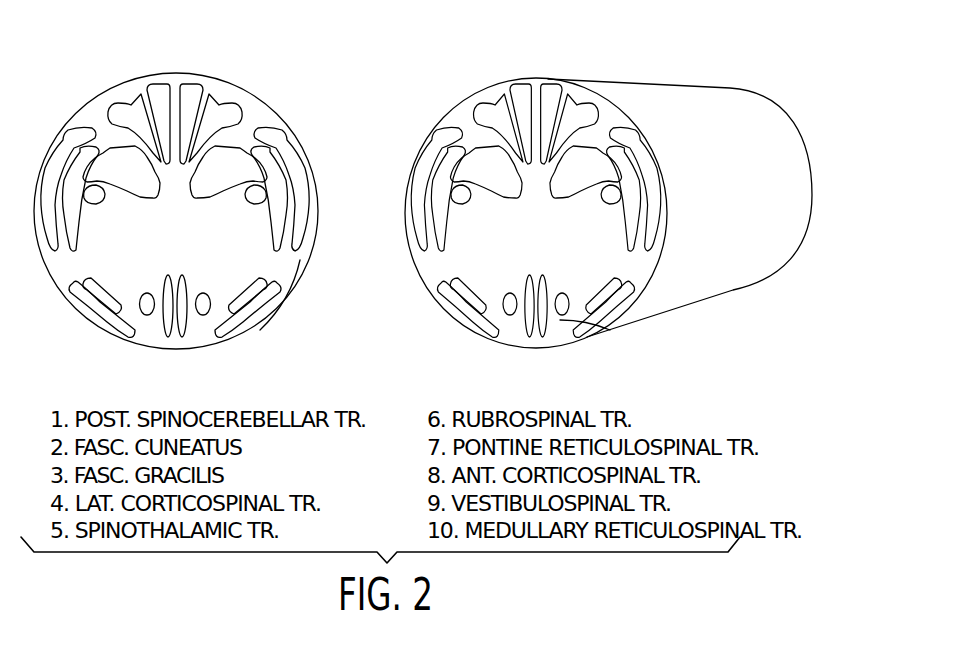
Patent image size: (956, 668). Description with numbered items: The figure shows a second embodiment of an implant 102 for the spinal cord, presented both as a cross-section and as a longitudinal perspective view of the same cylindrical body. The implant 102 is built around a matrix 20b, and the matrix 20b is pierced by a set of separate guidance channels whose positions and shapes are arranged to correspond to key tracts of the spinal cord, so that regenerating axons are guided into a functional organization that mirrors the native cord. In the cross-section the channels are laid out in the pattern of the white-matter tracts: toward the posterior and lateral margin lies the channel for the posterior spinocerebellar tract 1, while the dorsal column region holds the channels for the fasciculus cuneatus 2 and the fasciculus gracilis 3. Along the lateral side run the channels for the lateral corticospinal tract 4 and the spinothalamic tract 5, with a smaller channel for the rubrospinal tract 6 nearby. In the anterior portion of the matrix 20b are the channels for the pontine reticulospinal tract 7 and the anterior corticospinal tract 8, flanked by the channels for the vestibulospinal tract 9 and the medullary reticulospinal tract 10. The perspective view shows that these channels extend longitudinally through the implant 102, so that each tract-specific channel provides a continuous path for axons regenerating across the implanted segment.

The posterior spinocerebellar tract guidance channel 1 is at (72, 137).
The fasciculus cuneatus guidance channel 2 is at (117, 103).
The fasciculus gracilis guidance channel 3 is at (153, 88).
The lateral corticospinal tract guidance channel 4 is at (239, 155).
The spinothalamic tract guidance channel 5 is at (270, 160).
The rubrospinal tract guidance channel 6 is at (270, 193).
The pontine reticulospinal tract guidance channel 7 is at (202, 314).
The anterior corticospinal tract guidance channel 8 is at (163, 333).
The vestibulospinal tract guidance channel 9 is at (95, 318).
The medullary reticulospinal tract guidance channel 10 is at (90, 290).
The implant 102 is at (321, 55).
The matrix 20b is at (287, 268).